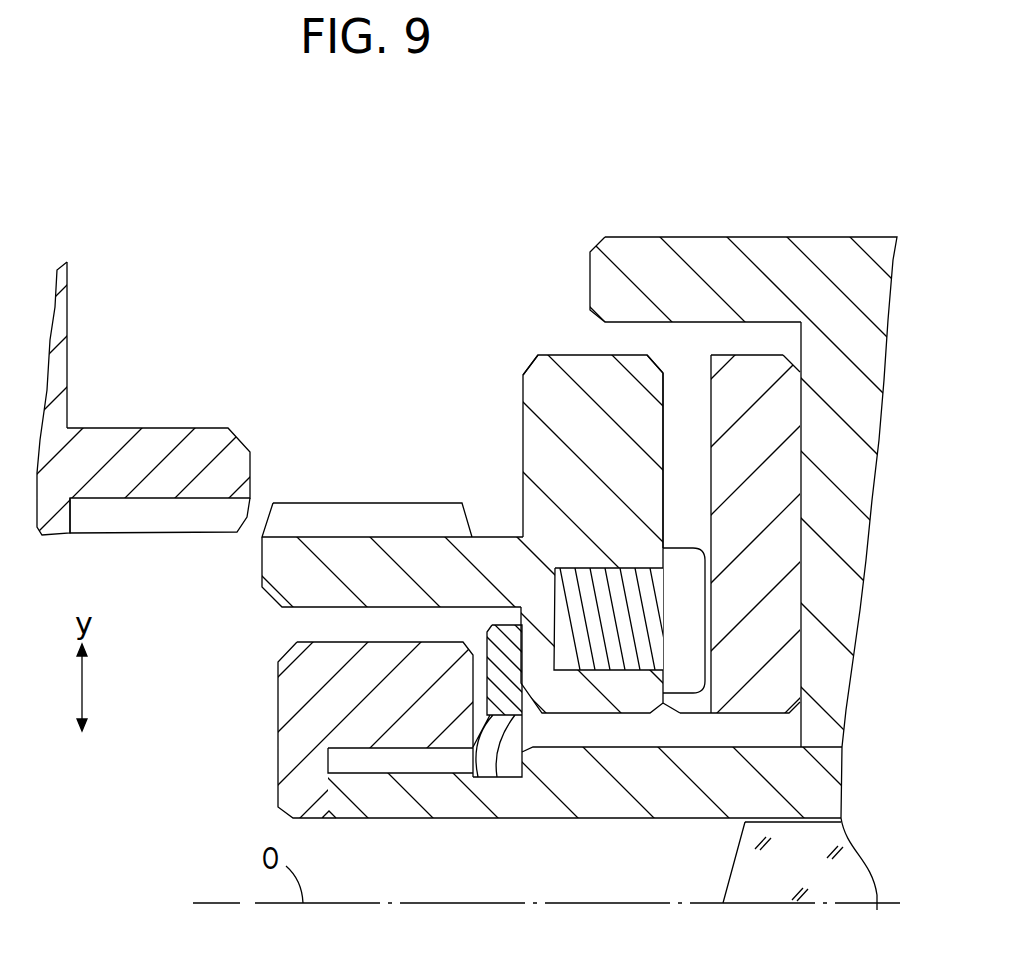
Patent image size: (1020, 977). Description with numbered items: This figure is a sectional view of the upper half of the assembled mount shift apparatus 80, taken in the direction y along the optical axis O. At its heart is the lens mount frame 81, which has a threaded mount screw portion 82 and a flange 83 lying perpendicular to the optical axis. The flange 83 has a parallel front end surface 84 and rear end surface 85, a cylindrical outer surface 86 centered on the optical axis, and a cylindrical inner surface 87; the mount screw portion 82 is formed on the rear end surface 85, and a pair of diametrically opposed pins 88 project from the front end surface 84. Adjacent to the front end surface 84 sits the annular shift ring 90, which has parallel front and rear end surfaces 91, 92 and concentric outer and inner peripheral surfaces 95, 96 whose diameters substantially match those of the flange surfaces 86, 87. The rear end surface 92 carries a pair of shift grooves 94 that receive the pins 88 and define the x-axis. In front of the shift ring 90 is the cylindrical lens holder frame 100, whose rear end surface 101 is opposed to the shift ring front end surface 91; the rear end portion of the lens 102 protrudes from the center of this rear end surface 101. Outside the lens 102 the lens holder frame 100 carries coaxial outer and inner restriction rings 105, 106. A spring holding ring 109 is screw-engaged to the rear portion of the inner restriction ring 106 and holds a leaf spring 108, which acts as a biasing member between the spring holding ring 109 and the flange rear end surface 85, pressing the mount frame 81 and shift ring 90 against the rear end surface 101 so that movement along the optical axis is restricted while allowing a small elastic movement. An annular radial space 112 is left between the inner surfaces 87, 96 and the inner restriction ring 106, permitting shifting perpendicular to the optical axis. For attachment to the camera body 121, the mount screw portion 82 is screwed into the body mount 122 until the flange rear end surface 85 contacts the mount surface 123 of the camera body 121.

The mount shift apparatus 80 is at (332, 343).
The lens mount frame 81 is at (477, 425).
The mount screw portion 82 is at (368, 535).
The flange 83 is at (523, 462).
The front end surface 84 is at (663, 432).
The rear end surface 85 is at (521, 617).
The cylindrical outer surface 86 is at (537, 354).
The cylindrical inner surface 87 is at (577, 713).
The pins 88 is at (692, 615).
The shift ring 90 is at (760, 363).
The front end surface 91 is at (801, 511).
The rear end surface 92 is at (661, 482).
The shift grooves 94 is at (710, 415).
The outer peripheral surface 95 is at (712, 349).
The inner peripheral surface 96 is at (720, 716).
The lens holder frame 100 is at (847, 243).
The rear end surface 101 is at (801, 693).
The lens 102 is at (750, 890).
The outer restriction ring 105 is at (637, 250).
The inner restriction ring 106 is at (605, 808).
The leaf spring 108 is at (487, 643).
The spring holding ring 109 is at (295, 689).
The annular space 112 is at (777, 733).
The camera body 121 is at (72, 413).
The body mount 122 is at (188, 498).
The mount surface 123 is at (67, 329).